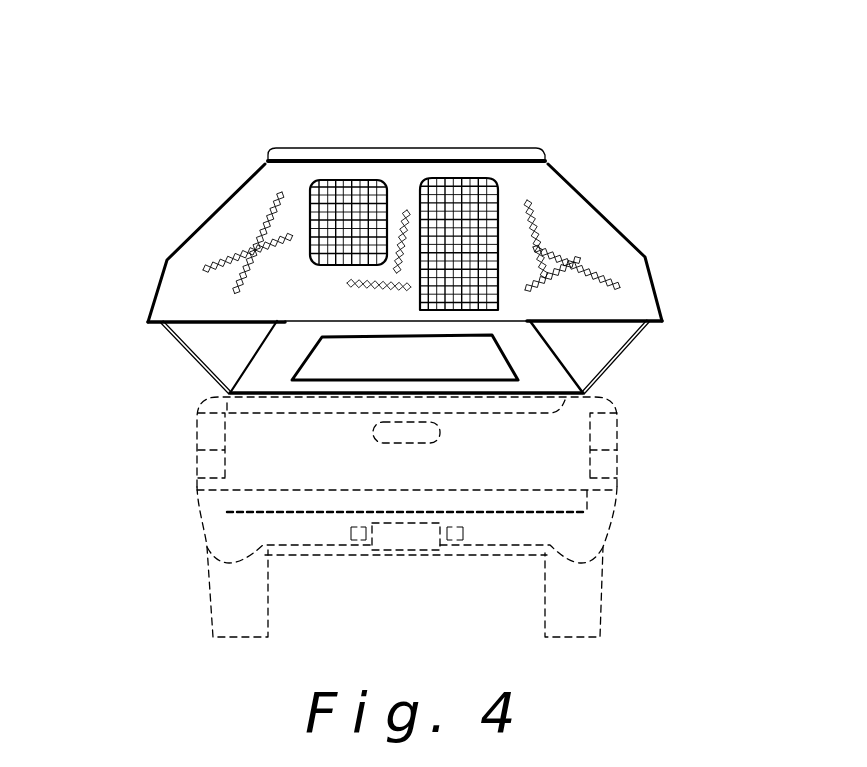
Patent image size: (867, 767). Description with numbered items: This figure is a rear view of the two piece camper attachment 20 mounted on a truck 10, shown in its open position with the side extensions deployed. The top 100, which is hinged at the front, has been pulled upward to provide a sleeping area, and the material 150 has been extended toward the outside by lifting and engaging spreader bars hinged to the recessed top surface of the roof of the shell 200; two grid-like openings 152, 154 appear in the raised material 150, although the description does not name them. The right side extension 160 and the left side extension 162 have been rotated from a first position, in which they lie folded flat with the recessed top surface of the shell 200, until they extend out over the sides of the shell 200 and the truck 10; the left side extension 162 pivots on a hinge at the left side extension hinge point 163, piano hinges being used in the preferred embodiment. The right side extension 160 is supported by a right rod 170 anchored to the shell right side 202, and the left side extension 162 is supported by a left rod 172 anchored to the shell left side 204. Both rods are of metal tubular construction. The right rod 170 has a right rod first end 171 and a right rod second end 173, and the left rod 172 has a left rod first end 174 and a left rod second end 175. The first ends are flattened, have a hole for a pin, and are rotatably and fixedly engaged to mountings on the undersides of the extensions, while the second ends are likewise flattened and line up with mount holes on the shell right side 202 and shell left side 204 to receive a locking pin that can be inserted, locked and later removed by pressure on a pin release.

The truck 10 is at (530, 458).
The two piece camper attachment 20 is at (714, 65).
The top 100 is at (490, 150).
The material 150 is at (553, 205).
The right window 152 is at (468, 203).
The left window 154 is at (338, 210).
The right side extension 160 is at (527, 318).
The left side extension 162 is at (227, 332).
The left side extension hinge point 163 is at (285, 322).
The right rod 170 is at (576, 364).
The right rod first end 171 is at (647, 322).
The left rod 172 is at (247, 367).
The right rod second end 173 is at (583, 390).
The left rod first end 174 is at (162, 322).
The left rod second end 175 is at (228, 393).
The shell 200 is at (545, 372).
The shell right side 202 is at (560, 365).
The shell left side 204 is at (222, 368).